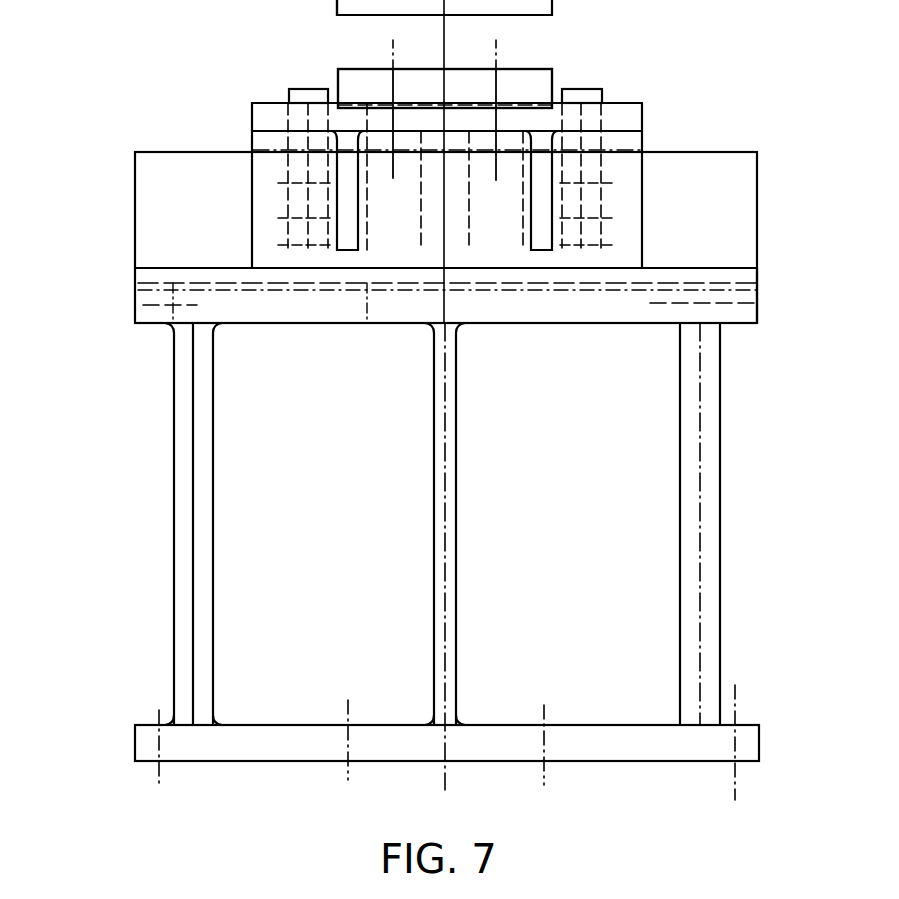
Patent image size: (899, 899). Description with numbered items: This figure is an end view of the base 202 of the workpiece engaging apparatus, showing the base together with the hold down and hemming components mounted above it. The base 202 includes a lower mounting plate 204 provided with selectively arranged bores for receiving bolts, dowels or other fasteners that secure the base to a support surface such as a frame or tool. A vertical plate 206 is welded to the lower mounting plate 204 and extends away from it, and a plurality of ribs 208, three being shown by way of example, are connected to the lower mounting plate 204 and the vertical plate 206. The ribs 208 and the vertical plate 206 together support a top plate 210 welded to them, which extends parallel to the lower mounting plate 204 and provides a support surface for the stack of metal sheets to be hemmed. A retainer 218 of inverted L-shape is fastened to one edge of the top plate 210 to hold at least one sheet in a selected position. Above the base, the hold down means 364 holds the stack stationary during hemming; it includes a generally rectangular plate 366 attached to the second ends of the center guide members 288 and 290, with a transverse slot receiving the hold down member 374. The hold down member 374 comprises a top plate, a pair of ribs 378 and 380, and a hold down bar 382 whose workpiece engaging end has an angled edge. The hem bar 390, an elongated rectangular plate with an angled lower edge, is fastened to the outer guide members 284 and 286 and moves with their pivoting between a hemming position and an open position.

The base 202 is at (100, 298).
The lower mounting plate 204 is at (150, 727).
The vertical plate 206 is at (185, 508).
The ribs 208 is at (207, 607).
The top plate 210 is at (730, 283).
The retainer 218 is at (185, 268).
The outer guide member 284 is at (597, 82).
The outer guide member 286 is at (299, 85).
The center guide member 288 is at (473, 115).
The center guide member 290 is at (370, 117).
The hold down means 364 is at (373, 60).
The rectangular plate 366 is at (275, 117).
The hold down member 374 is at (222, 121).
The rib 378 is at (343, 234).
The rib 380 is at (542, 200).
The hold down bar 382 is at (267, 142).
The hem bar 390 is at (718, 205).